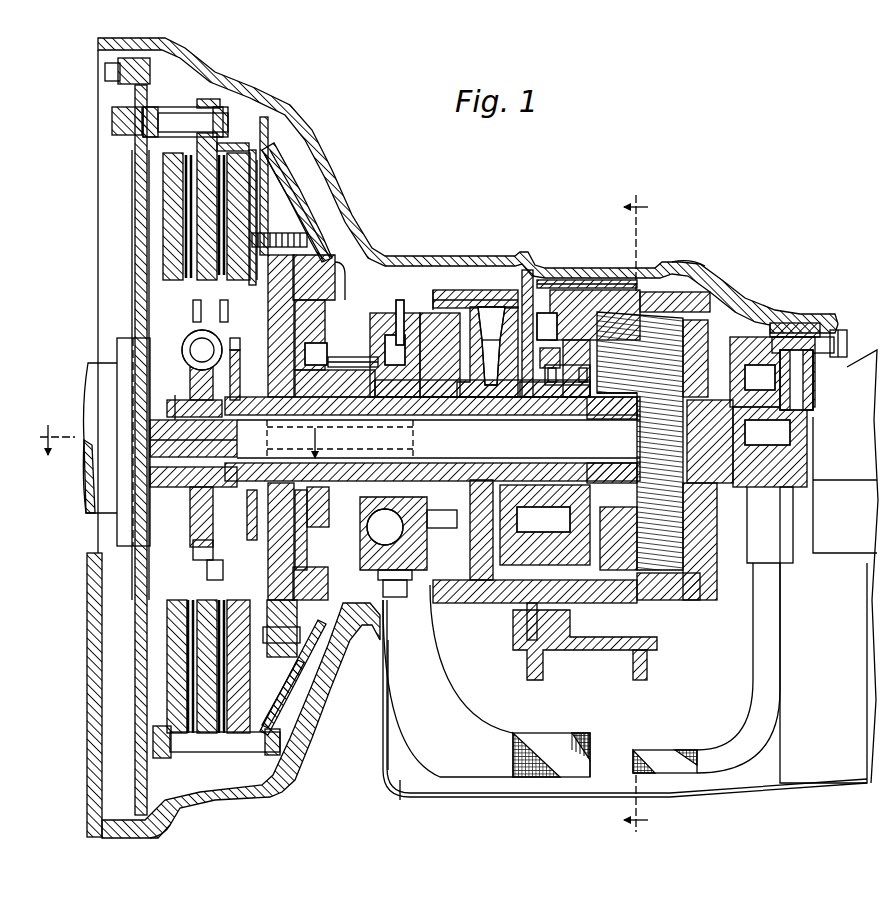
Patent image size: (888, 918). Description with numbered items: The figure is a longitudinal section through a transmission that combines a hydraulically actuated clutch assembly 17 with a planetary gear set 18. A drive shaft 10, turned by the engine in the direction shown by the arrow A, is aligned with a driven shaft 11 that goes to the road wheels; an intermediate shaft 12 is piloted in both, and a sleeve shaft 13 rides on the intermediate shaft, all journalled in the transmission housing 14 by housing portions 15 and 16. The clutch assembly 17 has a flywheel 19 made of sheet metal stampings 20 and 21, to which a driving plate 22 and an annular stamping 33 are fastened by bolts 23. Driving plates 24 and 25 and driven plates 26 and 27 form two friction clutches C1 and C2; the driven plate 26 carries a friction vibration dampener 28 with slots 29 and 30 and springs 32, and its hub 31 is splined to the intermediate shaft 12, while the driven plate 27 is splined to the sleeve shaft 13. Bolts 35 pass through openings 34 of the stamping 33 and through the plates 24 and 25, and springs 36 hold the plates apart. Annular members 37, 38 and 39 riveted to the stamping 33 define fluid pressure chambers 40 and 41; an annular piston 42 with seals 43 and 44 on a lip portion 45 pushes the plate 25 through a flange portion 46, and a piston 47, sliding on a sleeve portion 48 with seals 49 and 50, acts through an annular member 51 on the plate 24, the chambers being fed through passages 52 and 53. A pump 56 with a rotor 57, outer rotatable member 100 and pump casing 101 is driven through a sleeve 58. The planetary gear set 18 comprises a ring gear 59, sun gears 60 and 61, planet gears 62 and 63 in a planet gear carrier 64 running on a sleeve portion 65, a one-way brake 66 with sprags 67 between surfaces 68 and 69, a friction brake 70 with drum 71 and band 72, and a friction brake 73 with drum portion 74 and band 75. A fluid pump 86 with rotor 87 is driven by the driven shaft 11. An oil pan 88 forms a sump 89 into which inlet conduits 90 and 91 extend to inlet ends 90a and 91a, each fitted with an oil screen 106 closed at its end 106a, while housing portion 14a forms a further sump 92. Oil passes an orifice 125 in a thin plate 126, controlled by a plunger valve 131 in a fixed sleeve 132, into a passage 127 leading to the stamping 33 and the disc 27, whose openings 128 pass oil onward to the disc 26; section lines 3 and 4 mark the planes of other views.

The section line 3- 3 is at (642, 513).
The section line 4- 4 is at (176, 447).
The arrow A is at (108, 362).
The drive shaft 10 is at (96, 395).
The driven shaft 11 is at (850, 430).
The intermediate shaft 12 is at (475, 453).
The sleeve shaft 13 is at (566, 439).
The transmission housing 14 is at (730, 290).
The housing portion 14a is at (330, 690).
The housing portion 15 is at (492, 603).
The housing portion 16 is at (757, 375).
The hydraulically actuated clutch assembly 17 is at (252, 138).
The planetary gear set 18 is at (690, 270).
The flywheel 19 is at (135, 160).
The sheet metal stamping 20 is at (135, 200).
The sheet metal stamping 21 is at (140, 215).
The driving plate 22 is at (210, 99).
The bolts 23 is at (115, 123).
The driving plate 24 is at (170, 235).
The driving plate 25 is at (258, 165).
The driven plate 26 is at (195, 250).
The driven plate 27 is at (224, 200).
The friction vibration dampener 28 is at (192, 318).
The slots 29 is at (197, 372).
The slots 30 is at (198, 340).
The hub 31 is at (187, 480).
The springs 32 is at (193, 382).
The annular stamping 33 is at (296, 202).
The openings 34 is at (278, 715).
The bolts 35 is at (284, 745).
The springs 36 is at (200, 758).
The annular member 37 is at (276, 652).
The divider member 38 is at (322, 572).
The annular member 39 is at (296, 665).
The fluid pressure chamber 40 is at (322, 312).
The fluid pressure chamber 41 is at (300, 558).
The annular piston 42 is at (318, 340).
The seal 43 is at (266, 232).
The seal 44 is at (240, 400).
The lip portion 45 is at (250, 510).
The flange portion 46 is at (237, 338).
The piston 47 is at (307, 545).
The sleeve portion 48 is at (300, 385).
The seal 49 is at (320, 290).
The seal 50 is at (305, 505).
The annular member 51 is at (316, 225).
The passage 52 is at (298, 452).
The passage 53 is at (298, 478).
The pump 56 is at (425, 315).
The rotor 57 is at (470, 400).
The sleeve 58 is at (420, 400).
The ring gear 59 is at (660, 292).
The sun gear 60 is at (605, 420).
The sun gear 61 is at (645, 437).
The elongated planet gears 62 is at (605, 300).
The planet gears 63 is at (667, 583).
The planet gear carrier 64 is at (712, 335).
The sleeve portion 65 is at (572, 405).
The one-way brake 66 is at (538, 530).
The sprags 67 is at (530, 485).
The outer cylindrical surface 68 is at (541, 340).
The inner cylindrical surface 69 is at (528, 405).
The friction brake 70 is at (475, 285).
The brake drum 71 is at (490, 290).
The brake band 72 is at (445, 290).
The friction brake 73 is at (590, 280).
The drum portion 74 is at (528, 272).
The friction band 75 is at (570, 280).
The fluid pump 86 is at (790, 330).
The rotor 87 is at (812, 380).
The oil pan 88 is at (505, 800).
The lubricating oil sump 89 is at (420, 798).
The inlet conduit 90 is at (433, 660).
The inlet end 90a is at (552, 733).
The inlet conduit 91 is at (762, 668).
The inlet end 91a is at (676, 750).
The oil sump 92 is at (172, 820).
The outer rotatable member 100 is at (425, 520).
The pump casing 101 is at (405, 598).
The oil screen 106 is at (592, 750).
The end 106a is at (618, 752).
The orifice 125 is at (340, 372).
The thin plate 126 is at (335, 427).
The passage 127 is at (395, 450).
The openings 128 is at (222, 572).
The plunger valve 131 is at (338, 357).
The fixed sleeve 132 is at (398, 318).
The friction clutch C1 is at (190, 150).
The friction clutch C2 is at (245, 142).